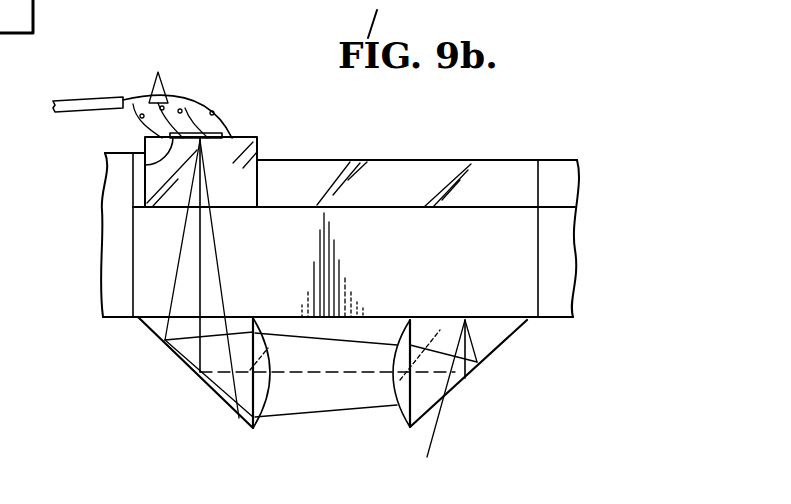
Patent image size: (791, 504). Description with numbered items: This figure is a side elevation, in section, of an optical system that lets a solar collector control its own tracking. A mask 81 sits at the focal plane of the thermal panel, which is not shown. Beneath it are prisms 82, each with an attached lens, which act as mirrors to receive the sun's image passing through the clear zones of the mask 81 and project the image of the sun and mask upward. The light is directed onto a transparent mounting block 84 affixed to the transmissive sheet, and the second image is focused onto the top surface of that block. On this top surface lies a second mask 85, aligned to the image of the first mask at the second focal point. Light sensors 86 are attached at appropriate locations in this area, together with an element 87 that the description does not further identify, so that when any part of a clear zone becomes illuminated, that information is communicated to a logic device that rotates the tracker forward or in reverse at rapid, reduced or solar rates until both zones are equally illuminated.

The mask 81 is at (150, 248).
The prisms 82 is at (205, 389).
The transparent mounting block 84 is at (282, 165).
The second mask 85 is at (145, 167).
The light sensors 86 is at (224, 137).
The light source 87 is at (160, 68).